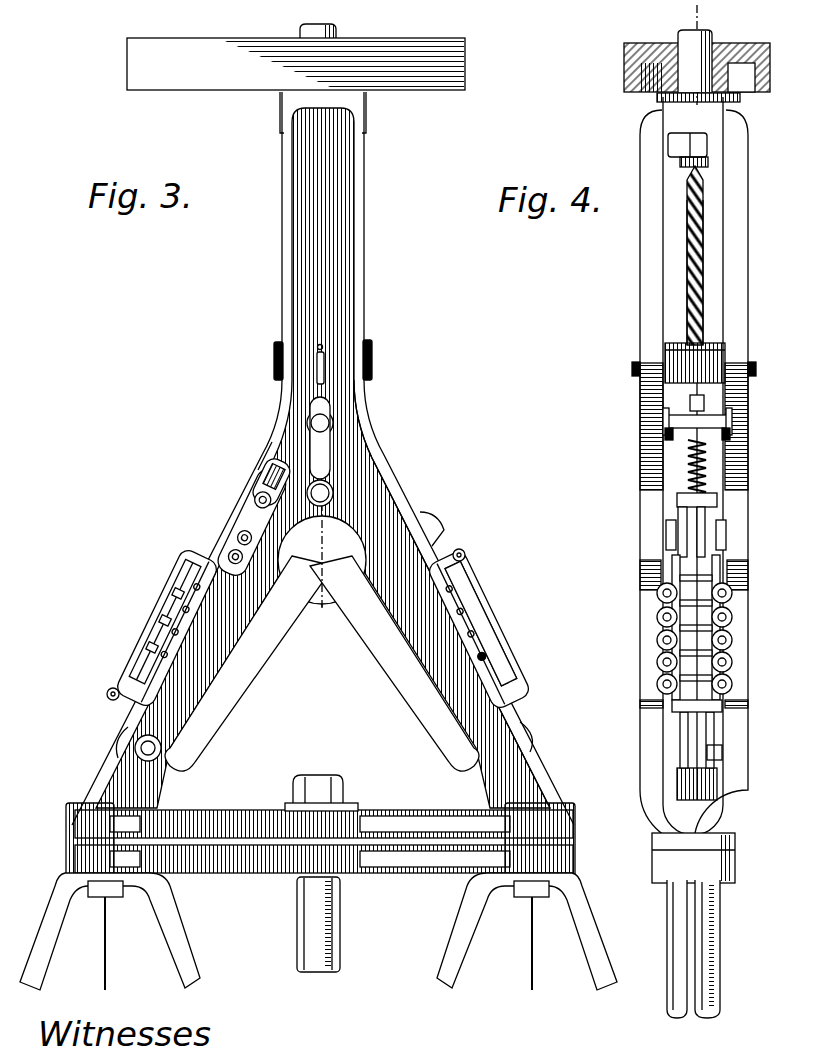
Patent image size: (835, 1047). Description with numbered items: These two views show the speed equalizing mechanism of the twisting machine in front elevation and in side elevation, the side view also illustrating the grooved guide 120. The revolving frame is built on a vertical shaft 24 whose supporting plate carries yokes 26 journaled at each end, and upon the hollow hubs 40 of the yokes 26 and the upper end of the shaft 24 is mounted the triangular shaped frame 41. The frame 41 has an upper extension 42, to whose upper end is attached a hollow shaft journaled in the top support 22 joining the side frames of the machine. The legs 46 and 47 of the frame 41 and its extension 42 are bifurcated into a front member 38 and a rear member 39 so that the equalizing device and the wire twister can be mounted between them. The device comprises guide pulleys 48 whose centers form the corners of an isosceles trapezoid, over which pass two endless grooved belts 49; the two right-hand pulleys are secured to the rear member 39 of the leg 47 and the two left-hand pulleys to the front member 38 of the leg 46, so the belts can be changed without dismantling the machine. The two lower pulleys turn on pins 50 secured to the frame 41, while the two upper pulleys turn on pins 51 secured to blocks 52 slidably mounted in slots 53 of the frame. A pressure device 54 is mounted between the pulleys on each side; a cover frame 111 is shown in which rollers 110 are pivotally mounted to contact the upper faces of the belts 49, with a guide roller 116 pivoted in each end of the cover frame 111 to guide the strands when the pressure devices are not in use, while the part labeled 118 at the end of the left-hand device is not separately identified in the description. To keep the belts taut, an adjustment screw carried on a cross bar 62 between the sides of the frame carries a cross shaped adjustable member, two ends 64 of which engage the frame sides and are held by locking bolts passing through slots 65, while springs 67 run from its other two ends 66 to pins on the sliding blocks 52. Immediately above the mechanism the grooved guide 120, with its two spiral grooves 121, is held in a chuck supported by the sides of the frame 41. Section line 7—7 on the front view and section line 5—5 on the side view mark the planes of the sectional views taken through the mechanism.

In FIG. 3, the top support 22 is at (422, 90).
In FIG. 4, the top support 22 is at (626, 91).
In FIG. 3, the upper extension 42 is at (343, 247).
In FIG. 3, the section line 7— 7 is at (318, 313).
In FIG. 4, the section line 5— 5 is at (694, 20).
In FIG. 3, the ends of adjustable member 64 is at (328, 413).
In FIG. 4, the ends of adjustable member 64 is at (662, 434).
In FIG. 3, the slots 65 is at (322, 458).
In FIG. 3, the springs 67 is at (263, 432).
In FIG. 4, the springs 67 is at (690, 466).
In FIG. 3, the slots 53 is at (270, 470).
In FIG. 3, the blocks 52 is at (252, 500).
In FIG. 4, the blocks 52 is at (719, 511).
In FIG. 3, the pins 51 is at (242, 542).
In FIG. 4, the pins 51 is at (720, 545).
In FIG. 3, the guide pulleys 48 is at (212, 532).
In FIG. 4, the guide pulleys 48 is at (680, 518).
In FIG. 3, the guide roller 116 is at (463, 553).
In FIG. 4, the guide roller 116 is at (677, 705).
In FIG. 3, the pivot eye 118 is at (108, 690).
In FIG. 3, the pressure device 54 is at (153, 613).
In FIG. 3, the leg 46 is at (255, 598).
In FIG. 3, the leg 47 is at (374, 596).
In FIG. 3, the cover frame 111 is at (498, 638).
In FIG. 4, the cover frame 111 is at (721, 583).
In FIG. 3, the rollers 110 is at (500, 660).
In FIG. 3, the endless grooved belts 49 is at (376, 664).
In FIG. 4, the endless grooved belts 49 is at (678, 614).
In FIG. 3, the pins 50 is at (140, 750).
In FIG. 4, the pins 50 is at (720, 752).
In FIG. 3, the triangular shaped frame 41 is at (238, 790).
In FIG. 3, the hollow hubs 40 is at (70, 860).
In FIG. 4, the hollow hubs 40 is at (652, 870).
In FIG. 3, the yokes 26 is at (182, 920).
In FIG. 3, the vertical shaft 24 is at (340, 926).
In FIG. 4, the spiral grooves 121 is at (690, 286).
In FIG. 4, the grooved guide 120 is at (688, 313).
In FIG. 4, the ends of adjustable member 66 is at (722, 425).
In FIG. 4, the cross bar 62 is at (644, 548).
In FIG. 4, the front member 38 is at (650, 653).
In FIG. 4, the rear member 39 is at (730, 658).